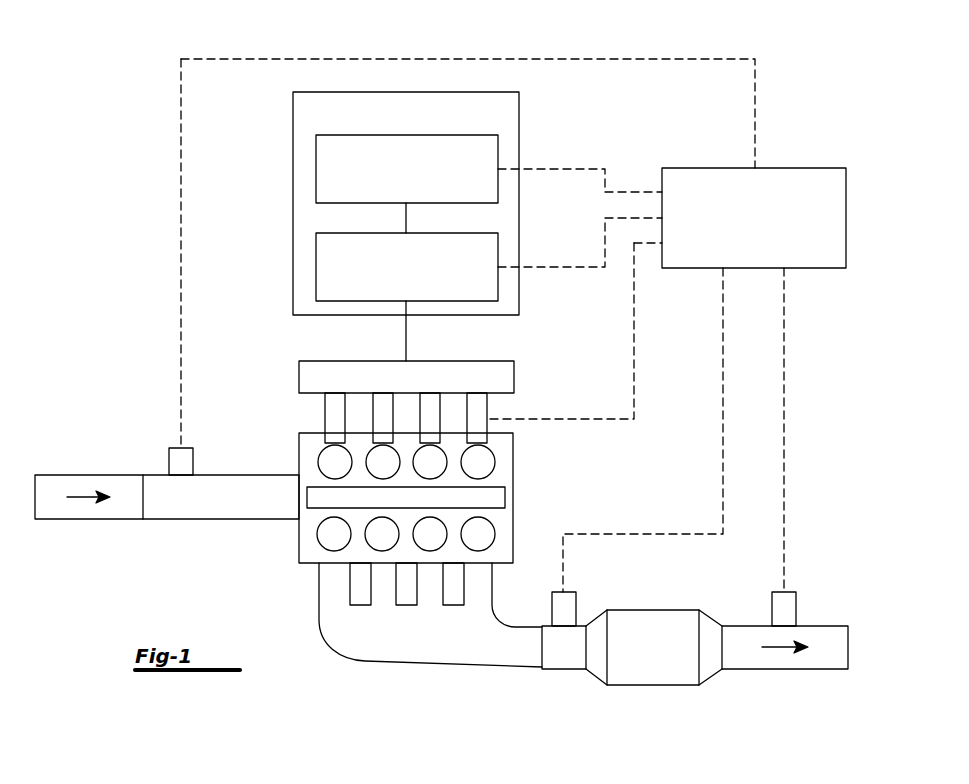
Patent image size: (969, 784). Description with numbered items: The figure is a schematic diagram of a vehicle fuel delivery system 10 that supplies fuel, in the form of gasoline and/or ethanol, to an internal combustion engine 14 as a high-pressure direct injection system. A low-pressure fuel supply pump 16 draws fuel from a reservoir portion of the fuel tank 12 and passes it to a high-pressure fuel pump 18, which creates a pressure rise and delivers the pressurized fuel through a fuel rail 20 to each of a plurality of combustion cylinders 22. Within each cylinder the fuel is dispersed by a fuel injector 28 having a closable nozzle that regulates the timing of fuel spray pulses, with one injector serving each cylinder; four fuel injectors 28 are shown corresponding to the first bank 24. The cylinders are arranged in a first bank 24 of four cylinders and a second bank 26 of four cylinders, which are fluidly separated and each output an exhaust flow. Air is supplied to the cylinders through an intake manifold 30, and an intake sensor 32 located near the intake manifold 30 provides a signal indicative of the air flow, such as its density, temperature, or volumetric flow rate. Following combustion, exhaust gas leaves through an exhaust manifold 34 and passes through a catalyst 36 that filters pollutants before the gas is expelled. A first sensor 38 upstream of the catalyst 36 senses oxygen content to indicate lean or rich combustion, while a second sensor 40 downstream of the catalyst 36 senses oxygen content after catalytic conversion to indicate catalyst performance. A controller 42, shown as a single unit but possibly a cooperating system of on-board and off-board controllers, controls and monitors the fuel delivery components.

The fuel delivery system 10 is at (143, 71).
The fuel tank 12 is at (293, 114).
The internal combustion engine 14 is at (299, 548).
The low-pressure fuel supply pump 16 is at (316, 170).
The high-pressure fuel pump 18 is at (316, 268).
The fuel rail 20 is at (299, 378).
The combustion cylinders 22 is at (495, 462).
The first bank 24 is at (500, 447).
The second bank 26 is at (500, 517).
The fuel injectors 28 is at (373, 428).
The intake manifold 30 is at (183, 519).
The intake sensor 32 is at (169, 462).
The exhaust manifold 34 is at (400, 663).
The catalyst 36 is at (655, 610).
The first sensor 38 is at (576, 600).
The second sensor 40 is at (796, 608).
The controller 42 is at (808, 168).